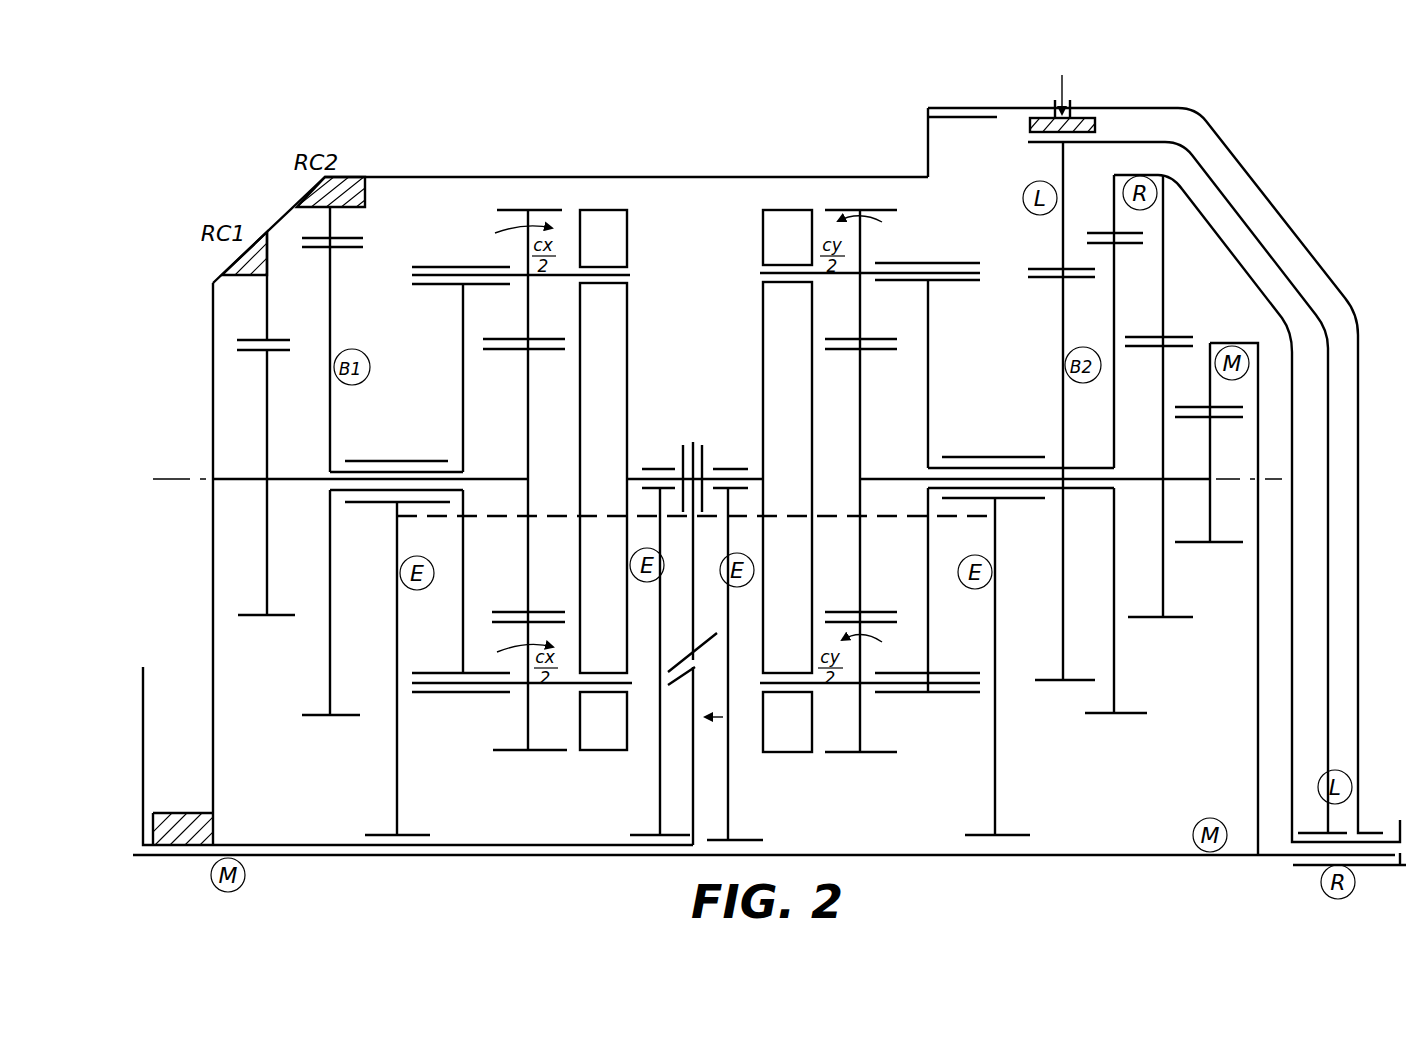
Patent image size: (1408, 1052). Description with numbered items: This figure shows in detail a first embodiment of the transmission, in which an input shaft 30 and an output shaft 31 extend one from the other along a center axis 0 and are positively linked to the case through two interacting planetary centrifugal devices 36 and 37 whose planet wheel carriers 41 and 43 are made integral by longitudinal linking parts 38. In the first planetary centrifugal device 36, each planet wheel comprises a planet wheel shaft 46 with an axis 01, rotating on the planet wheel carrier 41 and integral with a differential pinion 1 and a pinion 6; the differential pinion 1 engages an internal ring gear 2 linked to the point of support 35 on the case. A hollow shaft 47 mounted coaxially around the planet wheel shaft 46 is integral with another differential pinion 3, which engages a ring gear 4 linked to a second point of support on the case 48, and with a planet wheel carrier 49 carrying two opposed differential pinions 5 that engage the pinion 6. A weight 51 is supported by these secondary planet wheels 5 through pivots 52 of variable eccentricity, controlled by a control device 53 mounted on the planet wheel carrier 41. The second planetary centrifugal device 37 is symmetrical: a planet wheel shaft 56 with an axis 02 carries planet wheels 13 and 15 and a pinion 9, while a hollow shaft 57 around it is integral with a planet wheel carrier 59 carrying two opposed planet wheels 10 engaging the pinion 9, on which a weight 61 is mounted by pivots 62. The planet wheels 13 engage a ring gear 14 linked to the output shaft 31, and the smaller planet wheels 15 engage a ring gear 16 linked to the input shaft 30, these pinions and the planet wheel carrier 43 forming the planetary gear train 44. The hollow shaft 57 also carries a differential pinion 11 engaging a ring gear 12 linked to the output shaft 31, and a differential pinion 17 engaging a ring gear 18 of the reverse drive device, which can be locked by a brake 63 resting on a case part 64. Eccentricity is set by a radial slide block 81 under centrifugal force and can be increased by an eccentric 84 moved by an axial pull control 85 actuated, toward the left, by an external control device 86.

The center axis 0 is at (850, 852).
The axis of planet wheel shaft 01 is at (158, 478).
The axis of planet wheel shaft 02 is at (1242, 481).
The differential pinion 1 is at (267, 393).
The internal ring gear 2 is at (265, 312).
The differential pinion 3 is at (333, 318).
The ring gear 4 is at (327, 222).
The differential pinion 5 is at (528, 243).
The pinion 6 is at (528, 395).
The pinion 9 is at (860, 393).
The planet wheel 10 is at (860, 242).
The differential pinion 11 is at (1114, 264).
The ring gear 12 is at (1114, 222).
The planet wheel 13 is at (1163, 364).
The ring gear 14 is at (1163, 318).
The planet wheel 15 is at (1210, 432).
The ring gear 16 is at (1210, 398).
The differential pinion 17 is at (1063, 305).
The ring gear 18 is at (1063, 240).
The input shaft 30 is at (150, 860).
The output shaft 31 is at (1349, 879).
The point of support 35 is at (240, 268).
The first planetary centrifugal device 36 is at (463, 195).
The second planetary centrifugal device 37 is at (887, 203).
The linking parts 38 is at (570, 517).
The planet wheel carrier 41 is at (397, 748).
The planet wheel carrier 43 is at (995, 748).
The planetary gear train 44 is at (1163, 167).
The planet wheel shaft 46 is at (313, 482).
The hollow shaft 47 is at (461, 470).
The second point of support on case 48 is at (340, 226).
The planet wheel carrier 49 is at (463, 367).
The weight 51 is at (607, 223).
The pivot 52 is at (630, 274).
The control device 53 is at (702, 408).
The planet wheel shaft 56 is at (1140, 484).
The hollow shaft 57 is at (1050, 467).
The planet wheel carrier 59 is at (928, 402).
The weight 61 is at (785, 227).
The pivot 62 is at (760, 274).
The brake 63 is at (1040, 102).
The case part 64 is at (1220, 140).
The radial slide block 81 is at (702, 588).
The eccentric 84 is at (693, 772).
The axial pull control 85 is at (543, 844).
The external control device 86 is at (146, 683).